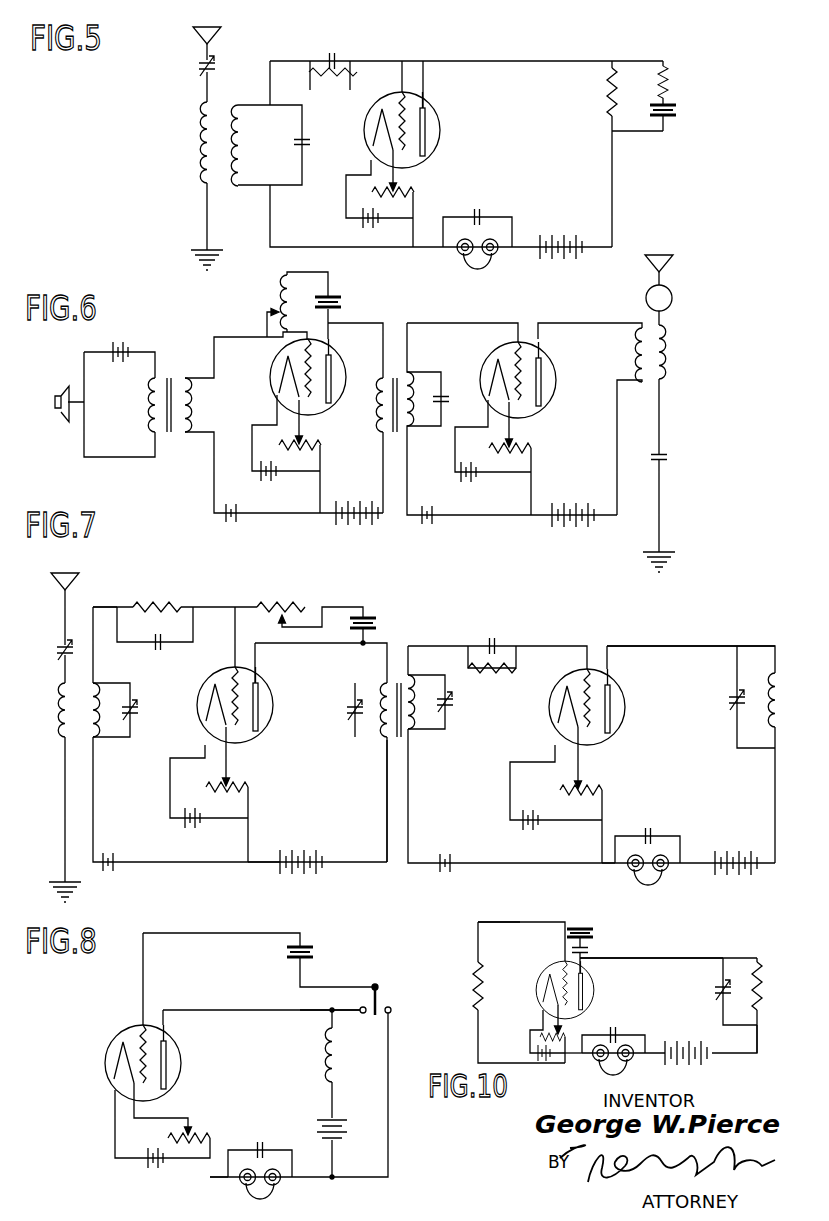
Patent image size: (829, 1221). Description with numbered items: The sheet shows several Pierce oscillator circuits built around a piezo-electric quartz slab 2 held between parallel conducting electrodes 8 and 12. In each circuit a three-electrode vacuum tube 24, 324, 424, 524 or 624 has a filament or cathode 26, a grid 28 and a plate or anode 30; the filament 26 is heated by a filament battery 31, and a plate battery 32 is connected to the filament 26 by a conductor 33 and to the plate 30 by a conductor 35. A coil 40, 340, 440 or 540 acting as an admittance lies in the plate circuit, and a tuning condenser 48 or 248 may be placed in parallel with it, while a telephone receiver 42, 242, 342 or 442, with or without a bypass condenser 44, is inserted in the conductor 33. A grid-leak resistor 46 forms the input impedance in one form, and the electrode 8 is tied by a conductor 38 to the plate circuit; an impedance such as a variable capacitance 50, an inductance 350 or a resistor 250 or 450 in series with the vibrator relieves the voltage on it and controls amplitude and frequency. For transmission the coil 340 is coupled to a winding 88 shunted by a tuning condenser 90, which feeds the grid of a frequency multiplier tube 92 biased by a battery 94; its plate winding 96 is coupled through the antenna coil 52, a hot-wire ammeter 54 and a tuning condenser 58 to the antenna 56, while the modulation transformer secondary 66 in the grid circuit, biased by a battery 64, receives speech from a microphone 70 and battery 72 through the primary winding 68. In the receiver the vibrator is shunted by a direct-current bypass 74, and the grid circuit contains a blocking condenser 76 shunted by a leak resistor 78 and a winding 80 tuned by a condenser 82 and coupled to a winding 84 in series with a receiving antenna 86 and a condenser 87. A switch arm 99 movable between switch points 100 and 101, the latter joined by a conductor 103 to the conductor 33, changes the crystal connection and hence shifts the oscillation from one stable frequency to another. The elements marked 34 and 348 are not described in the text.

In FIG. 5, the quartz slab vibrator 2 is at (676, 110).
In FIG. 6, the quartz slab vibrator 2 is at (341, 300).
In FIG. 7, the quartz slab vibrator 2 is at (377, 619).
In FIG. 8, the quartz slab vibrator 2 is at (313, 950).
In FIG. 10, the quartz slab vibrator 2 is at (592, 931).
In FIG. 5, the electrode 8 is at (672, 118).
In FIG. 6, the electrode 8 is at (338, 308).
In FIG. 7, the electrode 8 is at (377, 629).
In FIG. 8, the electrode 8 is at (313, 958).
In FIG. 10, the electrode 8 is at (593, 937).
In FIG. 5, the electrode 12 is at (676, 106).
In FIG. 6, the electrode 12 is at (338, 296).
In FIG. 7, the electrode 12 is at (368, 616).
In FIG. 8, the electrode 12 is at (307, 945).
In FIG. 10, the electrode 12 is at (585, 927).
In FIG. 10, the vacuum tube 24 is at (553, 967).
In FIG. 5, the filament 26 is at (368, 135).
In FIG. 6, the filament 26 is at (274, 380).
In FIG. 7, the filament 26 is at (202, 712).
In FIG. 8, the filament 26 is at (109, 1062).
In FIG. 10, the filament 26 is at (545, 986).
In FIG. 5, the grid 28 is at (407, 157).
In FIG. 6, the grid 28 is at (313, 402).
In FIG. 7, the grid 28 is at (236, 682).
In FIG. 8, the grid 28 is at (140, 1040).
In FIG. 10, the grid 28 is at (577, 1000).
In FIG. 5, the plate 30 is at (425, 128).
In FIG. 6, the plate 30 is at (333, 385).
In FIG. 7, the plate 30 is at (258, 705).
In FIG. 8, the plate 30 is at (168, 1063).
In FIG. 10, the plate 30 is at (588, 985).
In FIG. 5, the filament-heating battery 31 is at (362, 218).
In FIG. 6, the filament-heating battery 31 is at (272, 473).
In FIG. 7, the filament-heating battery 31 is at (199, 822).
In FIG. 8, the filament-heating battery 31 is at (150, 1178).
In FIG. 10, the filament-heating battery 31 is at (536, 1050).
In FIG. 5, the plate battery 32 is at (572, 238).
In FIG. 6, the plate battery 32 is at (356, 520).
In FIG. 7, the plate battery 32 is at (305, 856).
In FIG. 8, the plate battery 32 is at (338, 1125).
In FIG. 10, the plate battery 32 is at (706, 1050).
In FIG. 7, the conductor 33 is at (253, 860).
In FIG. 8, the conductor 33 is at (215, 1178).
In FIG. 10, the conductor 33 is at (580, 1052).
In FIG. 7, the conductor 34 is at (92, 611).
In FIG. 10, the conductor 34 is at (478, 938).
In FIG. 7, the conductor 35 is at (387, 790).
In FIG. 10, the conductor 35 is at (759, 1042).
In FIG. 10, the conductor 38 is at (590, 959).
In FIG. 10, the inductance coil 40 is at (764, 998).
In FIG. 10, the telephone receiver 42 is at (640, 1048).
In FIG. 5, the bypass condenser 44 is at (478, 208).
In FIG. 7, the bypass condenser 44 is at (650, 832).
In FIG. 8, the bypass condenser 44 is at (258, 1143).
In FIG. 10, the bypass condenser 44 is at (625, 1033).
In FIG. 10, the grid-leak resistor 46 is at (473, 978).
In FIG. 10, the tuning condenser 48 is at (717, 996).
In FIG. 10, the variable capacitance 50 is at (590, 951).
In FIG. 6, the antenna coil 52 is at (666, 352).
In FIG. 6, the hot-wire ammeter 54 is at (673, 298).
In FIG. 6, the antenna 56 is at (676, 262).
In FIG. 6, the tuning condenser 58 is at (672, 457).
In FIG. 6, the biasing battery 64 is at (233, 520).
In FIG. 7, the biasing battery 64 is at (112, 868).
In FIG. 6, the modulation transformer secondary winding 66 is at (193, 410).
In FIG. 6, the modulation transformer primary winding 68 is at (150, 392).
In FIG. 6, the microphone 70 is at (60, 418).
In FIG. 6, the battery 72 is at (124, 345).
In FIG. 5, the bypass 74 is at (607, 90).
In FIG. 5, the blocking condenser 76 is at (331, 53).
In FIG. 7, the blocking condenser 76 is at (160, 650).
In FIG. 5, the leak resistor 78 is at (337, 92).
In FIG. 7, the leak resistor 78 is at (158, 604).
In FIG. 5, the winding 80 is at (240, 148).
In FIG. 7, the winding 80 is at (93, 742).
In FIG. 5, the tuning condenser 82 is at (294, 142).
In FIG. 7, the tuning condenser 82 is at (138, 722).
In FIG. 5, the winding 84 is at (201, 150).
In FIG. 7, the winding 84 is at (58, 720).
In FIG. 5, the receiving antenna 86 is at (195, 33).
In FIG. 7, the receiving antenna 86 is at (58, 572).
In FIG. 5, the condenser 87 is at (201, 71).
In FIG. 7, the condenser 87 is at (58, 655).
In FIG. 6, the winding 88 is at (411, 382).
In FIG. 7, the winding 88 is at (414, 733).
In FIG. 6, the tuning condenser 90 is at (444, 396).
In FIG. 7, the tuning condenser 90 is at (450, 704).
In FIG. 6, the frequency multiplier 92 is at (542, 352).
In FIG. 7, the frequency multiplier 92 is at (578, 668).
In FIG. 6, the battery 94 is at (428, 522).
In FIG. 7, the battery 94 is at (446, 870).
In FIG. 6, the winding 96 is at (634, 366).
In FIG. 8, the switch arm 99 is at (378, 997).
In FIG. 8, the switch point 100 is at (341, 1036).
In FIG. 8, the switch point 101 is at (390, 1012).
In FIG. 8, the conductor 103 is at (389, 1045).
In FIG. 5, the telephone receiver 242 is at (483, 262).
In FIG. 7, the tuning condenser 248 is at (349, 714).
In FIG. 5, the resistor 250 is at (668, 86).
In FIG. 5, the vacuum tube 324 is at (399, 95).
In FIG. 6, the winding 340 is at (380, 432).
In FIG. 7, the telephone receiver 342 is at (648, 880).
In FIG. 7, the variable condenser 348 is at (730, 712).
In FIG. 6, the inductance 350 is at (282, 300).
In FIG. 6, the master oscillating tube 424 is at (276, 364).
In FIG. 7, the coil 440 is at (385, 690).
In FIG. 8, the telephone receiver 442 is at (276, 1187).
In FIG. 7, the resistor 450 is at (283, 604).
In FIG. 7, the vacuum tube 524 is at (198, 700).
In FIG. 8, the coil 540 is at (327, 1062).
In FIG. 8, the vacuum tube 624 is at (106, 1040).